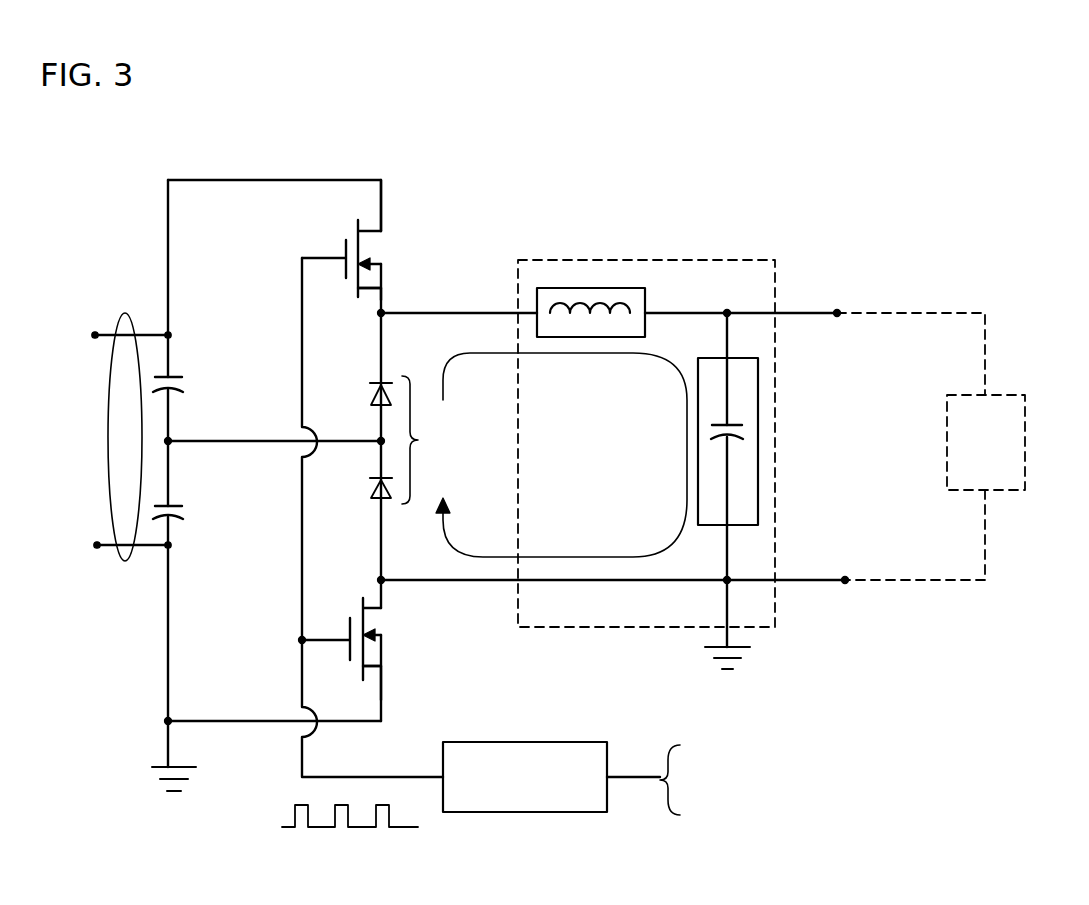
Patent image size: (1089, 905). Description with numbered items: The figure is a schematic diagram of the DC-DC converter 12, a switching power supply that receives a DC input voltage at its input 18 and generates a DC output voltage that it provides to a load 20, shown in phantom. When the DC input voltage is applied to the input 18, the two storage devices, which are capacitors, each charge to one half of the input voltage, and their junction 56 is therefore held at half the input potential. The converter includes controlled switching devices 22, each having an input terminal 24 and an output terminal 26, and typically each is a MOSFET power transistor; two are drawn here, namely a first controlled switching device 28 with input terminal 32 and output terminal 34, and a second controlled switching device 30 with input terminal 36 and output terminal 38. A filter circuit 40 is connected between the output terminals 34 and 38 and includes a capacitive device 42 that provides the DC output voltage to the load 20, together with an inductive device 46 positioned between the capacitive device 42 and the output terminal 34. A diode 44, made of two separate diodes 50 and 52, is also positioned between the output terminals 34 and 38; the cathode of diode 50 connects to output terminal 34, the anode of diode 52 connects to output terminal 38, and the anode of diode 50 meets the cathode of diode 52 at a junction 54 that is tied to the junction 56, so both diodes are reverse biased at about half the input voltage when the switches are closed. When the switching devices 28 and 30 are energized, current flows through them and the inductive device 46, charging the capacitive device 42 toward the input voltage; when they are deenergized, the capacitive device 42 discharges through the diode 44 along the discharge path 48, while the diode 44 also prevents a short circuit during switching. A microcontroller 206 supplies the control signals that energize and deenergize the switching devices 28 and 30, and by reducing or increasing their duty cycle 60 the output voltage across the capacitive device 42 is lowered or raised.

The DC-DC converter 12 is at (418, 96).
The input 18 is at (121, 313).
The load 20 is at (1010, 401).
The controlled switching devices 22 is at (422, 243).
The input terminal 24 is at (383, 215).
The output terminal 26 is at (381, 291).
The controlled switching device 28 is at (338, 248).
The controlled switching device 30 is at (346, 639).
The input terminal 32 is at (373, 223).
The output terminal 34 is at (377, 294).
The input terminal 36 is at (387, 673).
The output terminal 38 is at (378, 605).
The filter circuit 40 is at (742, 259).
The capacitive device 42 is at (752, 430).
The diode 44 is at (389, 436).
The inductive device 46 is at (635, 295).
The discharge path 48 is at (582, 553).
The diode 50 is at (368, 392).
The diode 52 is at (368, 483).
The junction 54 is at (378, 438).
The junction 56 is at (171, 444).
The duty cycle 60 is at (325, 832).
The microcontroller 206 is at (530, 748).